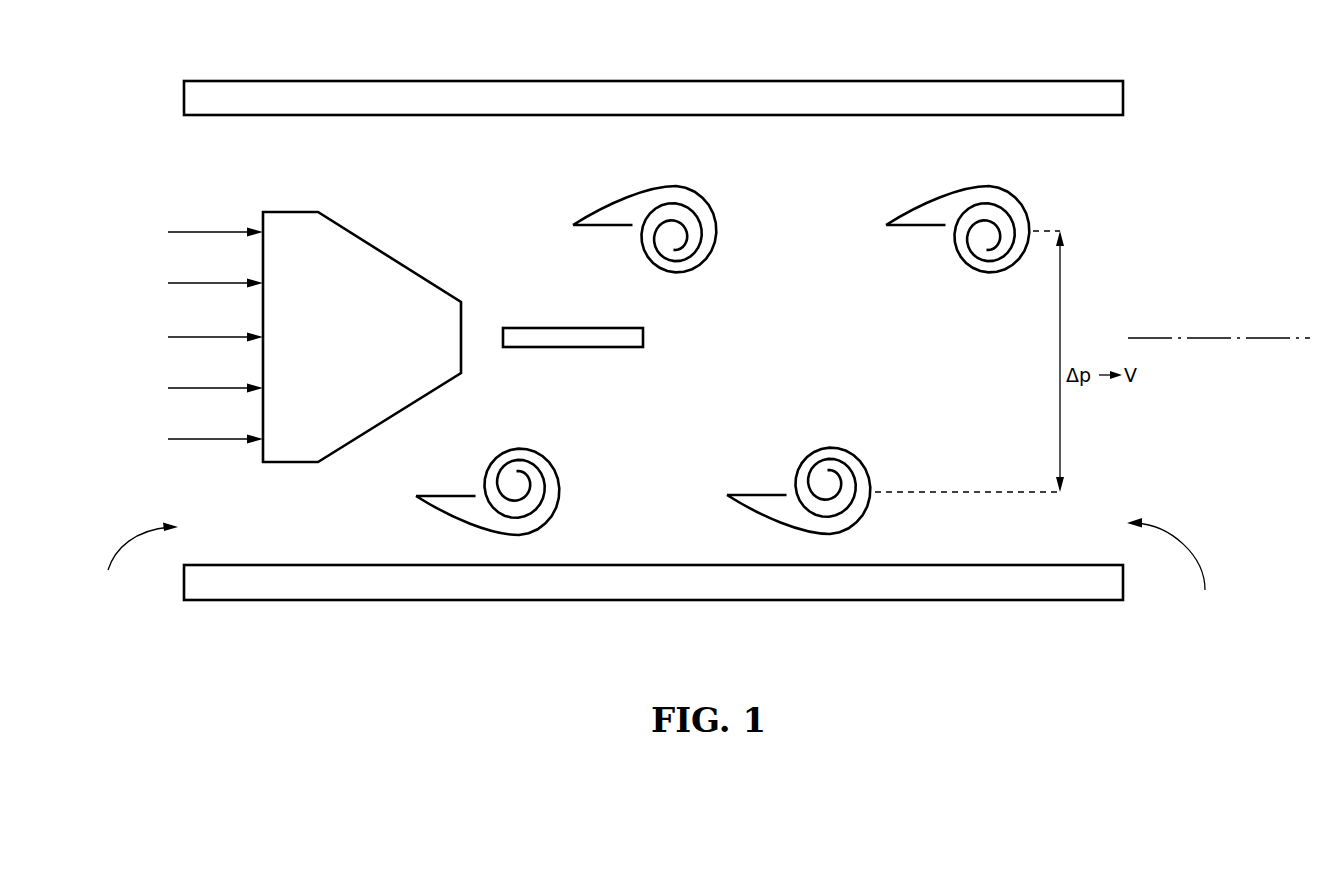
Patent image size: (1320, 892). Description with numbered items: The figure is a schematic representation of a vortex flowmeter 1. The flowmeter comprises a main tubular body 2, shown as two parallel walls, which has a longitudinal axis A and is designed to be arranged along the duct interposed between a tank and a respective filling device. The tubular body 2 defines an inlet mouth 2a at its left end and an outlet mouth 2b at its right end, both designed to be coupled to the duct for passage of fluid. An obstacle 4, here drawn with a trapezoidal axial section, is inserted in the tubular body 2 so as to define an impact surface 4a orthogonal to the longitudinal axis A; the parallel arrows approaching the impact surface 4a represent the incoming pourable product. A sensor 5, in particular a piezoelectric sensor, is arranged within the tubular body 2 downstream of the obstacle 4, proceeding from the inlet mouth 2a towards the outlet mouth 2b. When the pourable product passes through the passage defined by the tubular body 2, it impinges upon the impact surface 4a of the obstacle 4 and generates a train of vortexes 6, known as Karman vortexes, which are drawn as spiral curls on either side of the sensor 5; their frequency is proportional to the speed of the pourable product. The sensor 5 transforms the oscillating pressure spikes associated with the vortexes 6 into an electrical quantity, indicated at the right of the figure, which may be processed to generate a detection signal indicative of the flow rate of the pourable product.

The vortex flowmeter 1 is at (1185, 99).
The main tubular body 2 is at (445, 578).
The inlet mouth 2a is at (136, 558).
The outlet mouth 2b is at (1171, 566).
The obstacle 4 is at (297, 438).
The impact surface 4a is at (250, 412).
The sensor 5 is at (630, 338).
The vortexes 6 is at (694, 199).
The longitudinal axis A is at (1285, 337).